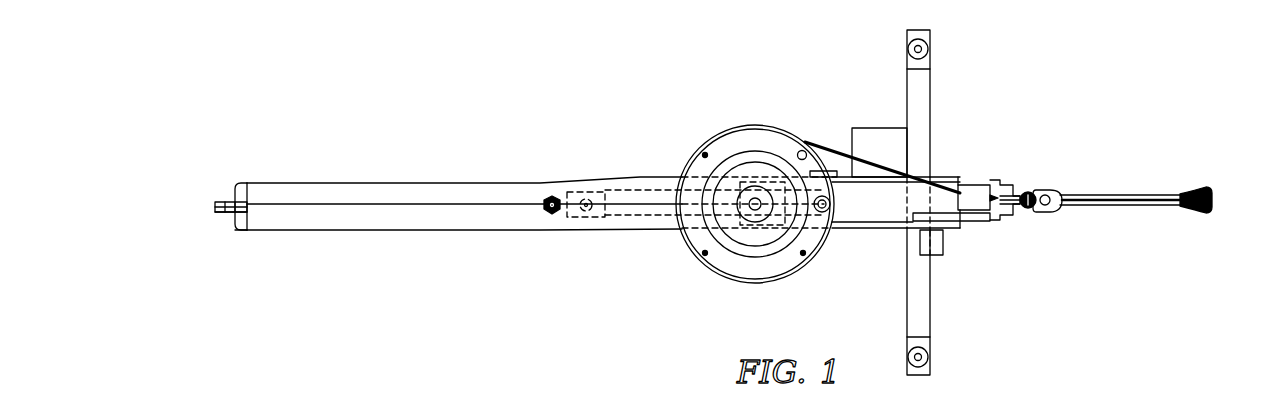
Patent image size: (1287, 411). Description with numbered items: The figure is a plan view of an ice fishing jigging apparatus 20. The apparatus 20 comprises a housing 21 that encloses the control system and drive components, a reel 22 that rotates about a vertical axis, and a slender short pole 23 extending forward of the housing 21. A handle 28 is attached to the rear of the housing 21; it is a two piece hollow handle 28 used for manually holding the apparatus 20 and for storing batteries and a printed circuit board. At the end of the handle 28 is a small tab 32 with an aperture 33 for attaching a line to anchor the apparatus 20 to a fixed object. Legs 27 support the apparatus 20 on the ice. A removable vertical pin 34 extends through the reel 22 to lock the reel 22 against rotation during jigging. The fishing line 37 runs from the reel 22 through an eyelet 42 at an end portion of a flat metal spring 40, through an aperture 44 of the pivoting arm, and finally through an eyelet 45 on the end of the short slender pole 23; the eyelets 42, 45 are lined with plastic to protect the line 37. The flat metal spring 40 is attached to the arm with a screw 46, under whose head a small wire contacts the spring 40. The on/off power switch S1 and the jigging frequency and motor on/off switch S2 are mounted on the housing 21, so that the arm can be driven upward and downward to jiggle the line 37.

The ice fishing jigging apparatus 20 is at (438, 317).
The housing 21 is at (898, 235).
The reel 22 is at (747, 229).
The slender short pole 23 is at (1121, 182).
The legs 27 is at (695, 174).
The handle 28 is at (533, 181).
The tab 32 is at (198, 181).
The aperture 33 is at (205, 243).
The vertical pin 34 is at (837, 127).
The fishing line 37 is at (894, 154).
The flat metal spring 40 is at (1044, 249).
The eyelet 42 is at (1054, 232).
The aperture 44 is at (1060, 215).
The eyelet 45 is at (1218, 218).
The screw 46 is at (1013, 187).
The on/off power switch S1 is at (531, 243).
The jigging frequency and motor on/off switch S2 is at (970, 271).